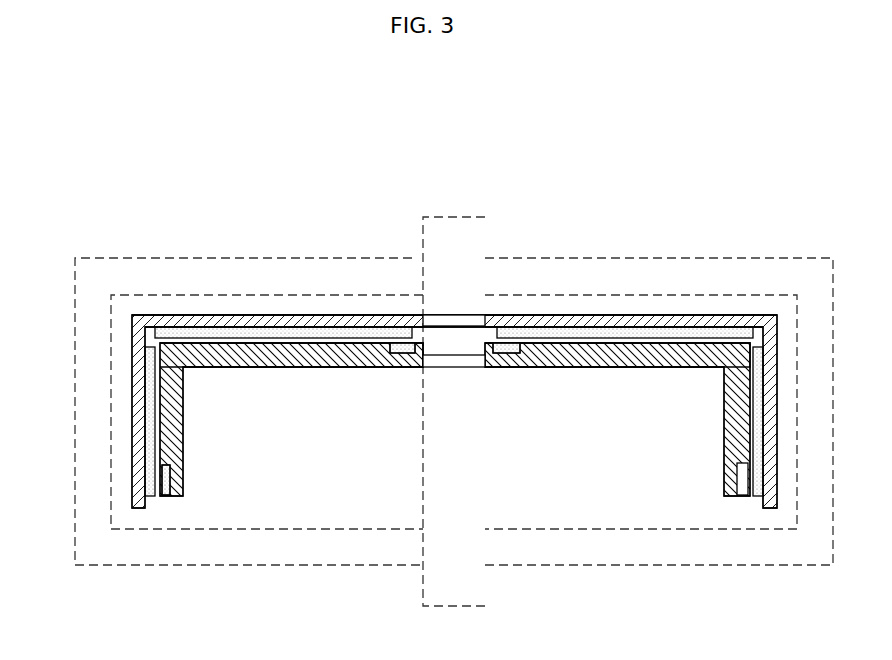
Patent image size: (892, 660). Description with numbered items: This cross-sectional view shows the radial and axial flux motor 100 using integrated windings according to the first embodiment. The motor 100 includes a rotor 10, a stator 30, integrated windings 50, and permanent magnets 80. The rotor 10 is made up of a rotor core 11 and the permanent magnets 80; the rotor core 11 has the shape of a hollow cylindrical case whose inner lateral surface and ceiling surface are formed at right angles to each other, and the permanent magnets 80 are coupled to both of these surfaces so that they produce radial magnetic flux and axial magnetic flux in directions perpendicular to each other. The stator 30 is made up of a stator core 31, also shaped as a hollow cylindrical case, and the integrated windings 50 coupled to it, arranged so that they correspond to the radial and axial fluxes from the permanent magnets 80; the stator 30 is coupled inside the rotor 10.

The radial and axial flux motor 100 is at (762, 157).
The rotor 10 is at (614, 311).
The rotor core 11 is at (209, 320).
The permanent magnets 80 is at (285, 335).
The stator 30 is at (722, 443).
The stator core 31 is at (340, 360).
The integrated windings 50 is at (402, 348).